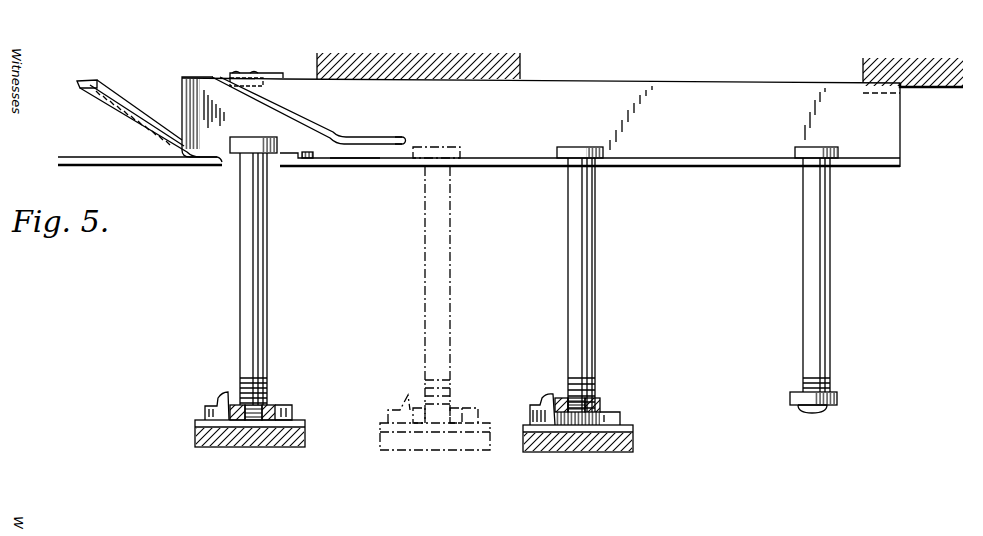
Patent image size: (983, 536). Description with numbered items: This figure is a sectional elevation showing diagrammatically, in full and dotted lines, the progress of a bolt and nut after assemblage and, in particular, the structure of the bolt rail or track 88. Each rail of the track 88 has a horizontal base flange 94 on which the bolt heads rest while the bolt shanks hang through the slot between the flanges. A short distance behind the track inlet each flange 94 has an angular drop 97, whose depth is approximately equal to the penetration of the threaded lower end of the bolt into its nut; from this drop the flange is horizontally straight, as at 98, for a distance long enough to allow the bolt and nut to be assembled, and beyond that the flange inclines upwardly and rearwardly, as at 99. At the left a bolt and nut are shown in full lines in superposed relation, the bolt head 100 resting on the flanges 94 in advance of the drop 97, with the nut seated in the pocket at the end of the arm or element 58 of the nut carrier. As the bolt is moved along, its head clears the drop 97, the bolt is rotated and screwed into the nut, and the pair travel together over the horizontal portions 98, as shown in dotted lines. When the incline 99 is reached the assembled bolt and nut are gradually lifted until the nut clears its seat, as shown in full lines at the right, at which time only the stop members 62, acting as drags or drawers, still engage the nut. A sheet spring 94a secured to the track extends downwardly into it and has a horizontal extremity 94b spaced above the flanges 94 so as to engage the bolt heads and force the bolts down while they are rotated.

The arm or element 58 is at (305, 437).
The stop members 62 is at (212, 405).
The bolt track 88 is at (662, 90).
The horizontal base flange 94 is at (387, 166).
The sheet spring 94a is at (287, 120).
The horizontal extremity 94b is at (377, 137).
The angular drop 97 is at (298, 159).
The horizontal straight portion 98 is at (347, 162).
The upward incline 99 is at (550, 162).
The bolt head 100 is at (272, 147).